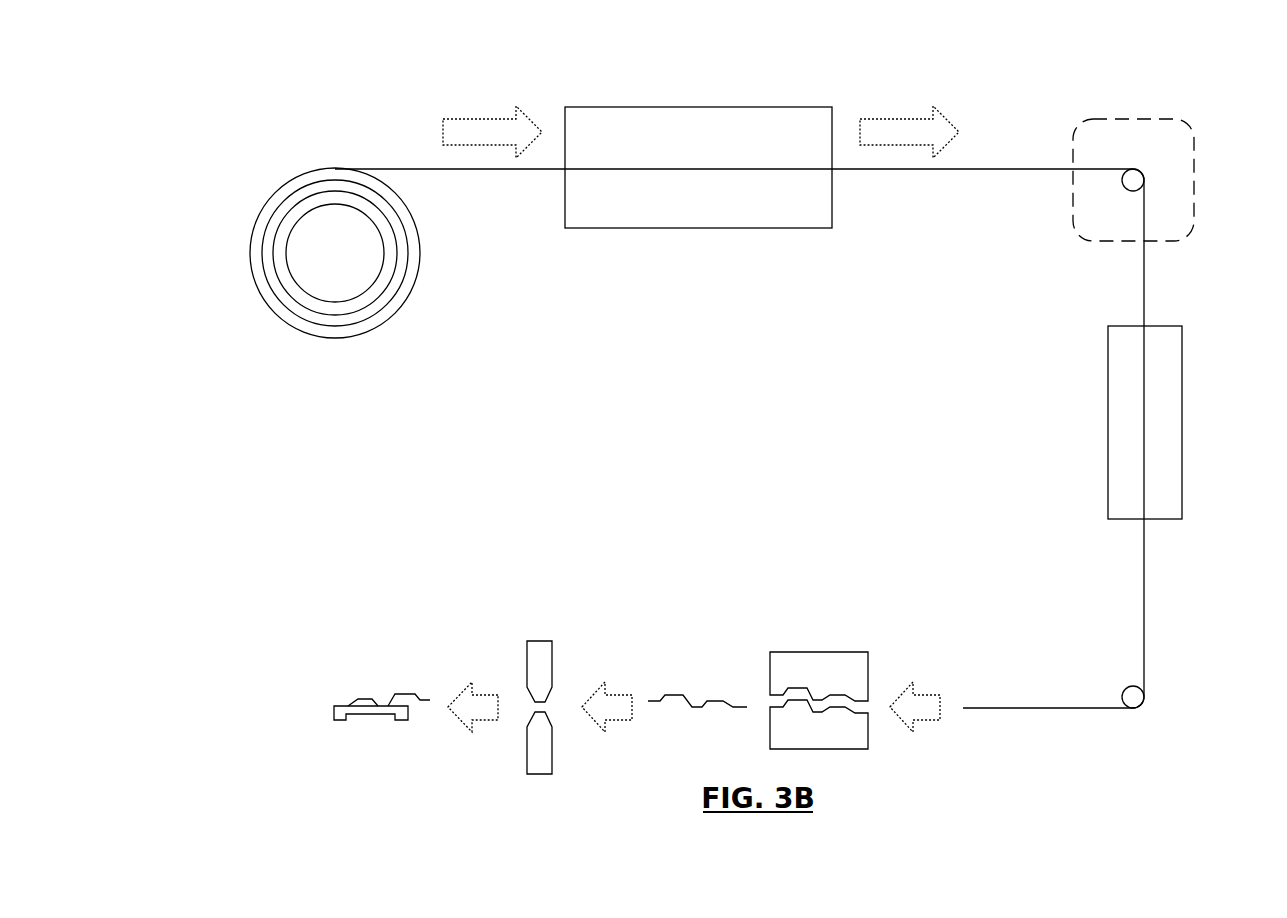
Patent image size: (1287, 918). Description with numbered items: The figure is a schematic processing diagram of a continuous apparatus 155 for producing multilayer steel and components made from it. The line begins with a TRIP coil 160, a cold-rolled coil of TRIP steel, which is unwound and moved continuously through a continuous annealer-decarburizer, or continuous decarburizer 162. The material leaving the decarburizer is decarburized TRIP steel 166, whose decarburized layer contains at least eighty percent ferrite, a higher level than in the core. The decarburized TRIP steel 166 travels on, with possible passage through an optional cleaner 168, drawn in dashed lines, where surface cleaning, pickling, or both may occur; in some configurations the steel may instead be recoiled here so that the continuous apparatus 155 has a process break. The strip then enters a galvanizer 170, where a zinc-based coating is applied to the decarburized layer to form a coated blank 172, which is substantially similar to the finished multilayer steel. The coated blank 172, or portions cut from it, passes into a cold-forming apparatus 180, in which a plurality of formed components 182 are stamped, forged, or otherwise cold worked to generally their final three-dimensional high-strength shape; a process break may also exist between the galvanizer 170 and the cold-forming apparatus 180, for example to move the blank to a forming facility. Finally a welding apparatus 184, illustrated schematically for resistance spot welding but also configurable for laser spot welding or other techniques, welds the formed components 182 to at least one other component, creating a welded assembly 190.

The continuous apparatus 155 is at (1180, 145).
The TRIP coil 160 is at (302, 333).
The continuous decarburizer 162 is at (747, 228).
The decarburized TRIP steel 166 is at (1018, 170).
The cleaner 168 is at (1195, 178).
The galvanizer 170 is at (1108, 397).
The coated blank 172 is at (1144, 605).
The cold-forming apparatus 180 is at (795, 607).
The formed components 182 is at (697, 707).
The welding apparatus 184 is at (555, 610).
The welded assembly 190 is at (365, 702).